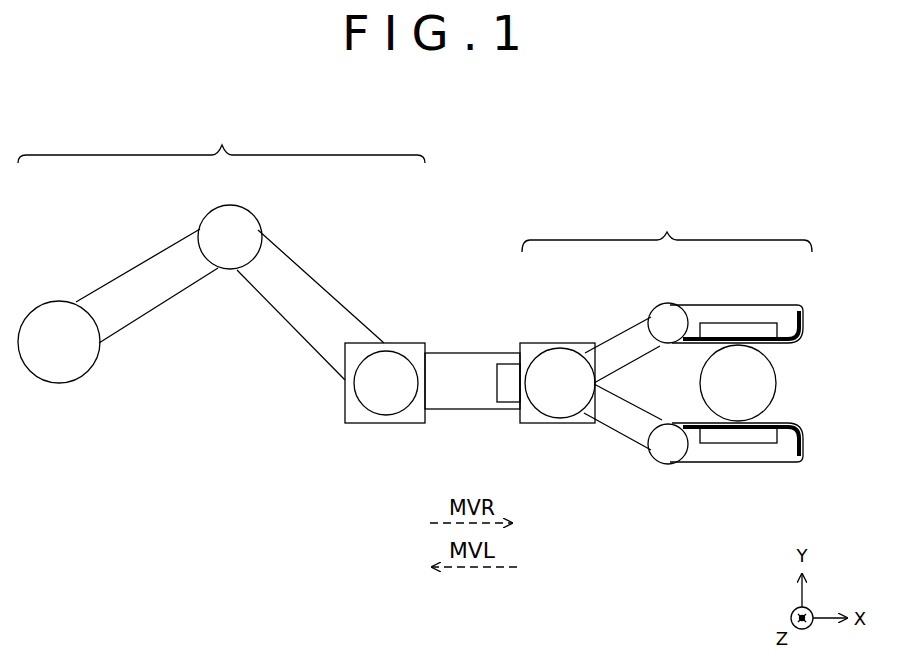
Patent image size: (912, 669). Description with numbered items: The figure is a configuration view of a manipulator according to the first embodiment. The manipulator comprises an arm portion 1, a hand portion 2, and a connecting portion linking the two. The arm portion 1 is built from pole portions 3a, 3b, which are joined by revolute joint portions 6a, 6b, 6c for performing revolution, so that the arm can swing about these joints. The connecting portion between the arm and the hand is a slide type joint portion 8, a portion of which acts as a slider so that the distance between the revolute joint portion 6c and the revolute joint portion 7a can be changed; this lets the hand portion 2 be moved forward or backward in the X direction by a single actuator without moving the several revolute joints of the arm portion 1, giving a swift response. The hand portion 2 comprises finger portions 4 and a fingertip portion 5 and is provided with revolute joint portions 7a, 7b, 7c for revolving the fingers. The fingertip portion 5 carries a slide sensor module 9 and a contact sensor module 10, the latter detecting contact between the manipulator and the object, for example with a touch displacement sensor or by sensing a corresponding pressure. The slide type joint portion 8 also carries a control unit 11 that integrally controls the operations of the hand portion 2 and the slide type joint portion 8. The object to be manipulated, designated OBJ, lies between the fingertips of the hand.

The arm portion 1 is at (221, 142).
The hand portion 2 is at (667, 230).
The pole portion 3a is at (146, 270).
The pole portion 3b is at (312, 297).
The finger portion 4 is at (625, 335).
The fingertip portion 5 is at (708, 315).
The revolute joint portion 6a is at (55, 369).
The revolute joint portion 6b is at (233, 218).
The revolute joint portion 6c is at (387, 407).
The revolute joint portion 7a is at (560, 365).
The revolute joint portion 7b is at (667, 308).
The revolute joint portion 7c is at (667, 460).
The slide type joint portion 8 is at (457, 367).
The slide sensor module 9 is at (748, 328).
The contact sensor module 10 is at (805, 313).
The control unit 11 is at (510, 373).
The object OBJ is at (738, 383).